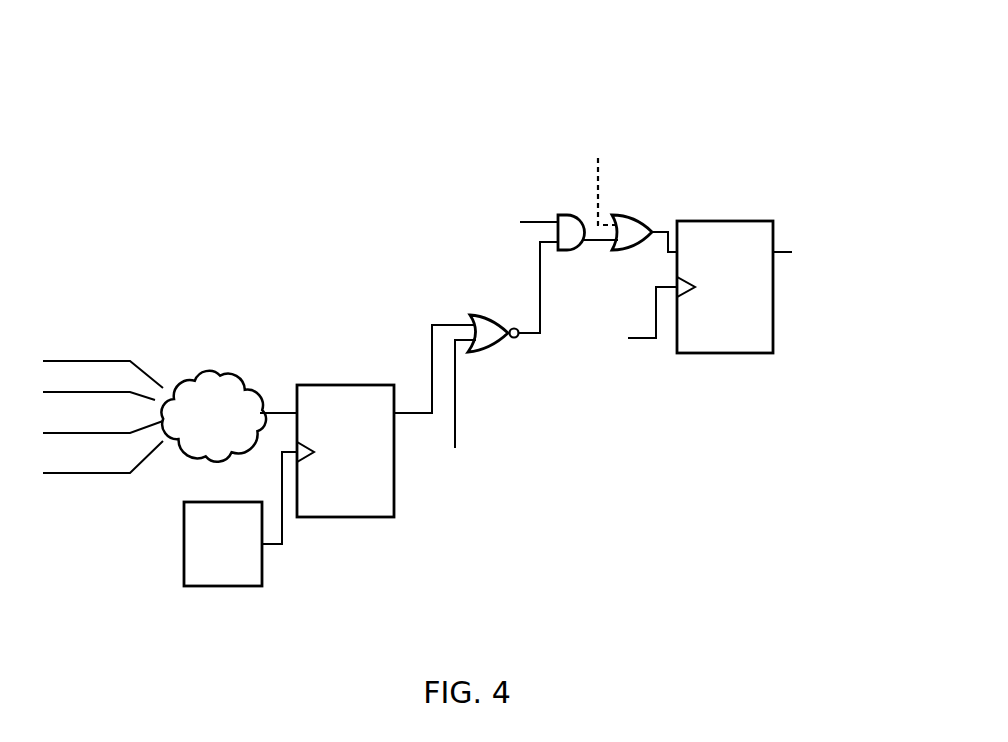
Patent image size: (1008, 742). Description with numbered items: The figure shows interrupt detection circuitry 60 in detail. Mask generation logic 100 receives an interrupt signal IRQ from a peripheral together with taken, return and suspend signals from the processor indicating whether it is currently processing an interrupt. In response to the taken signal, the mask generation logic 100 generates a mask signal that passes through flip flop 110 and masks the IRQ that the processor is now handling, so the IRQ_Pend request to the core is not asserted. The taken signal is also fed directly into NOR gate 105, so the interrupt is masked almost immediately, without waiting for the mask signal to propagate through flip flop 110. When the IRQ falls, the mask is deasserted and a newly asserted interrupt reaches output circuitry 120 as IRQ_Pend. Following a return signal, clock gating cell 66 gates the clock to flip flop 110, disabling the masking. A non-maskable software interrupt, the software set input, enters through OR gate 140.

The interrupt detection circuitry 60 is at (553, 82).
The mask generation logic 100 is at (228, 370).
The flip flop 110 is at (352, 517).
The clock gating cell 66 is at (222, 586).
The NOR gate 105 is at (492, 347).
The OR gate 140 is at (637, 214).
The output circuitry 120 is at (717, 353).